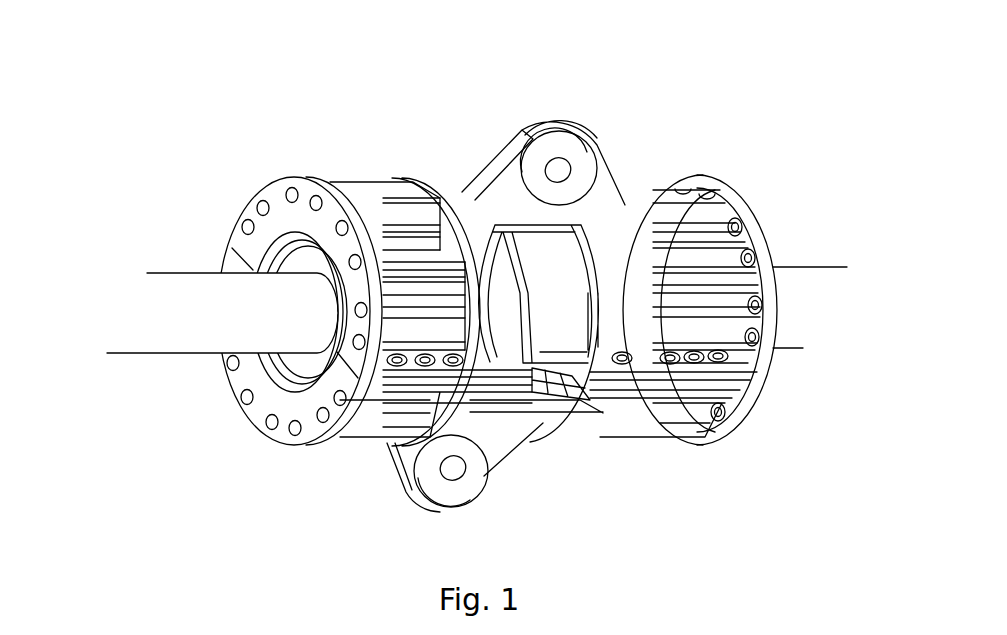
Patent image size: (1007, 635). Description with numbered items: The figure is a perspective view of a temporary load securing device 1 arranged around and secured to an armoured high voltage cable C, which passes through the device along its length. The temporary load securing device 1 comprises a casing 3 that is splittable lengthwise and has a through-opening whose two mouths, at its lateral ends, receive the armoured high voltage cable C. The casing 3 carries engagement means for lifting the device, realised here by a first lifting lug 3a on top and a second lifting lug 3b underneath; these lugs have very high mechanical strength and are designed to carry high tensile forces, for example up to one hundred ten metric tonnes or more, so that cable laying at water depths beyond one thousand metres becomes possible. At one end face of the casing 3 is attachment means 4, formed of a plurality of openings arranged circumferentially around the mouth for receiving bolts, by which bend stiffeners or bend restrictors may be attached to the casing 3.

The temporary load securing device 1 is at (755, 100).
The casing 3 is at (751, 219).
The first lifting lug 3a is at (577, 156).
The second lifting lug 3b is at (470, 478).
The attachment means 4 is at (287, 214).
The armoured high voltage cable C is at (192, 292).